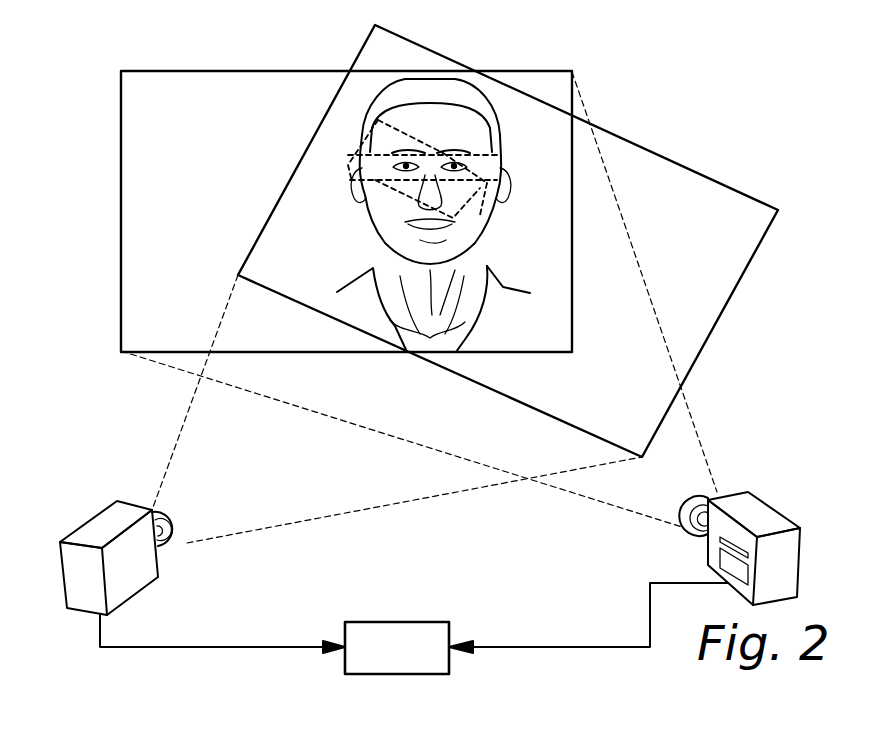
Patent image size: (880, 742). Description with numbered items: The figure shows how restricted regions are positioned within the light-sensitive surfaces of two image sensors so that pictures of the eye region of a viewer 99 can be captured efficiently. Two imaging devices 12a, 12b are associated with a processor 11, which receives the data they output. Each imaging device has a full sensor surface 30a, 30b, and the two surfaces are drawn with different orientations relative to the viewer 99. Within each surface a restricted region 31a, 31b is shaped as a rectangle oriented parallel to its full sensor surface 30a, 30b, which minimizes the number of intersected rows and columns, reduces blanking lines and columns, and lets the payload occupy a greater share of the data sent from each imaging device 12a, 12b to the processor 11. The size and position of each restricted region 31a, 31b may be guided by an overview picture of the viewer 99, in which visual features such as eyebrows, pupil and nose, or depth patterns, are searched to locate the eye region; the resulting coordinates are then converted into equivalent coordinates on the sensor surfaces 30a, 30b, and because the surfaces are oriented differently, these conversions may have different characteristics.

The processor 11 is at (413, 622).
The imaging device 12a is at (100, 528).
The imaging device 12b is at (750, 507).
The full sensor surface 30a is at (287, 182).
The full sensor surface 30b is at (572, 97).
The restricted region 31a is at (353, 155).
The restricted region 31b is at (463, 182).
The viewer 99 is at (433, 90).